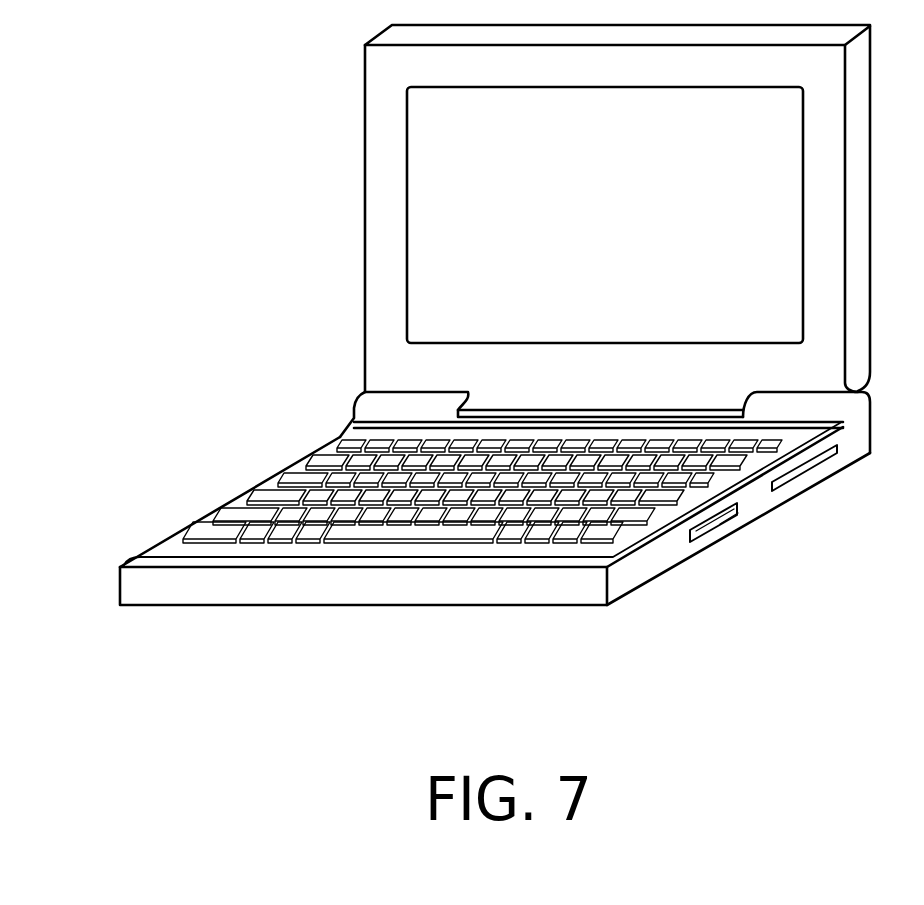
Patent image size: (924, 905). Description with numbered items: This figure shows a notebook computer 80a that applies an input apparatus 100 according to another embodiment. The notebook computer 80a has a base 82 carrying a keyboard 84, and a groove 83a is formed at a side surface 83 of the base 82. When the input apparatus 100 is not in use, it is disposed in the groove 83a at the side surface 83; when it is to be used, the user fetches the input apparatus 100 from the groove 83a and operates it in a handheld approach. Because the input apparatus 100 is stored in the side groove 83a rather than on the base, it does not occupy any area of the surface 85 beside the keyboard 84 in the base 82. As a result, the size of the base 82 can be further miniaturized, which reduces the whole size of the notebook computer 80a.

The notebook computer 80a is at (901, 748).
The base 82 is at (160, 551).
The surface 85 is at (172, 540).
The keyboard 84 is at (282, 492).
The side surface 83 is at (753, 500).
The groove 83a is at (713, 533).
The input apparatus 100 is at (743, 520).